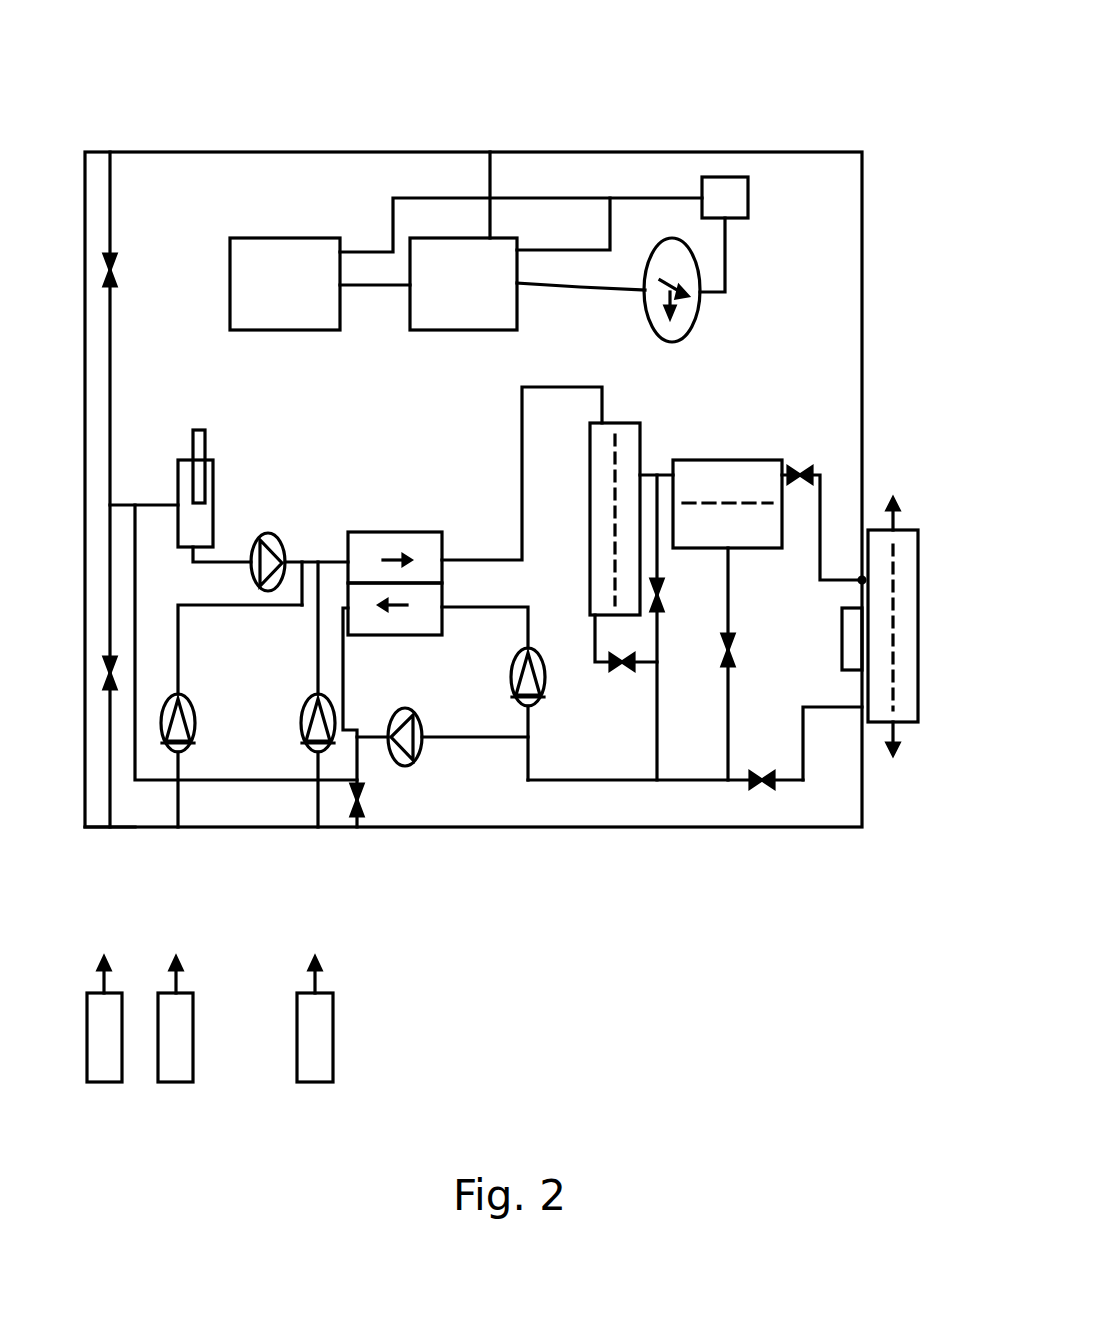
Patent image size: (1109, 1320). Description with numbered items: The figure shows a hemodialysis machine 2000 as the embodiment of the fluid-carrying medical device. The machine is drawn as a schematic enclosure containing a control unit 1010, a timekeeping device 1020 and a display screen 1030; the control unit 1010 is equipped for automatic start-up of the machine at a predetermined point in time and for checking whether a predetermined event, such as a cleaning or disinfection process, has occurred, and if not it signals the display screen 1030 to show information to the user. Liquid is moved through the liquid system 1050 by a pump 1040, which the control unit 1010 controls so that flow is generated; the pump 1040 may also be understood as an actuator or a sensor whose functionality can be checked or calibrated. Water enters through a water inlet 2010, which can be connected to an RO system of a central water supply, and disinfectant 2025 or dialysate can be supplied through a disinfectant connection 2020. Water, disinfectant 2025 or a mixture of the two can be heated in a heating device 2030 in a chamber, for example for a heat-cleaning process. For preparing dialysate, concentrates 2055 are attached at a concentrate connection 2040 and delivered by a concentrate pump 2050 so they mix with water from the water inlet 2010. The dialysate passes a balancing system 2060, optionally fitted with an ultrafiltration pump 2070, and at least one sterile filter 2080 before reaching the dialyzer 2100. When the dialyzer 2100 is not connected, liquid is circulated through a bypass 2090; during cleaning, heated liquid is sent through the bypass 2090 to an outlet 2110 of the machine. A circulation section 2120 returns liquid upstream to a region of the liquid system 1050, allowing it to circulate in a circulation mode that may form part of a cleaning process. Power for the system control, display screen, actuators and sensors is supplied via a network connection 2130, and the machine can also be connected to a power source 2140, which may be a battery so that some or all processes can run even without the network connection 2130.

The hemodialysis machine 2000 is at (468, 826).
The water inlet 2010 is at (109, 150).
The disinfectant connection 2020 is at (105, 827).
The disinfectant 2025 is at (122, 1037).
The heating device 2030 is at (182, 460).
The concentrate connection 2040 is at (247, 872).
The concentrate pump 2050 is at (168, 752).
The concentrates 2055 is at (193, 1037).
The balancing system 2060 is at (395, 532).
The ultrafiltration pump 2070 is at (405, 766).
The sterile filter 2080 is at (612, 423).
The bypass 2090 is at (842, 647).
The dialyzer 2100 is at (895, 527).
The outlet 2110 is at (357, 827).
The circulation section 2120 is at (132, 827).
The network connection 2130 is at (492, 152).
The power source 2140 is at (727, 177).
The control unit 1010 is at (462, 238).
The timekeeping device 1020 is at (672, 238).
The display screen 1030 is at (285, 238).
The pump 1040 is at (266, 533).
The liquid system 1050 is at (223, 563).